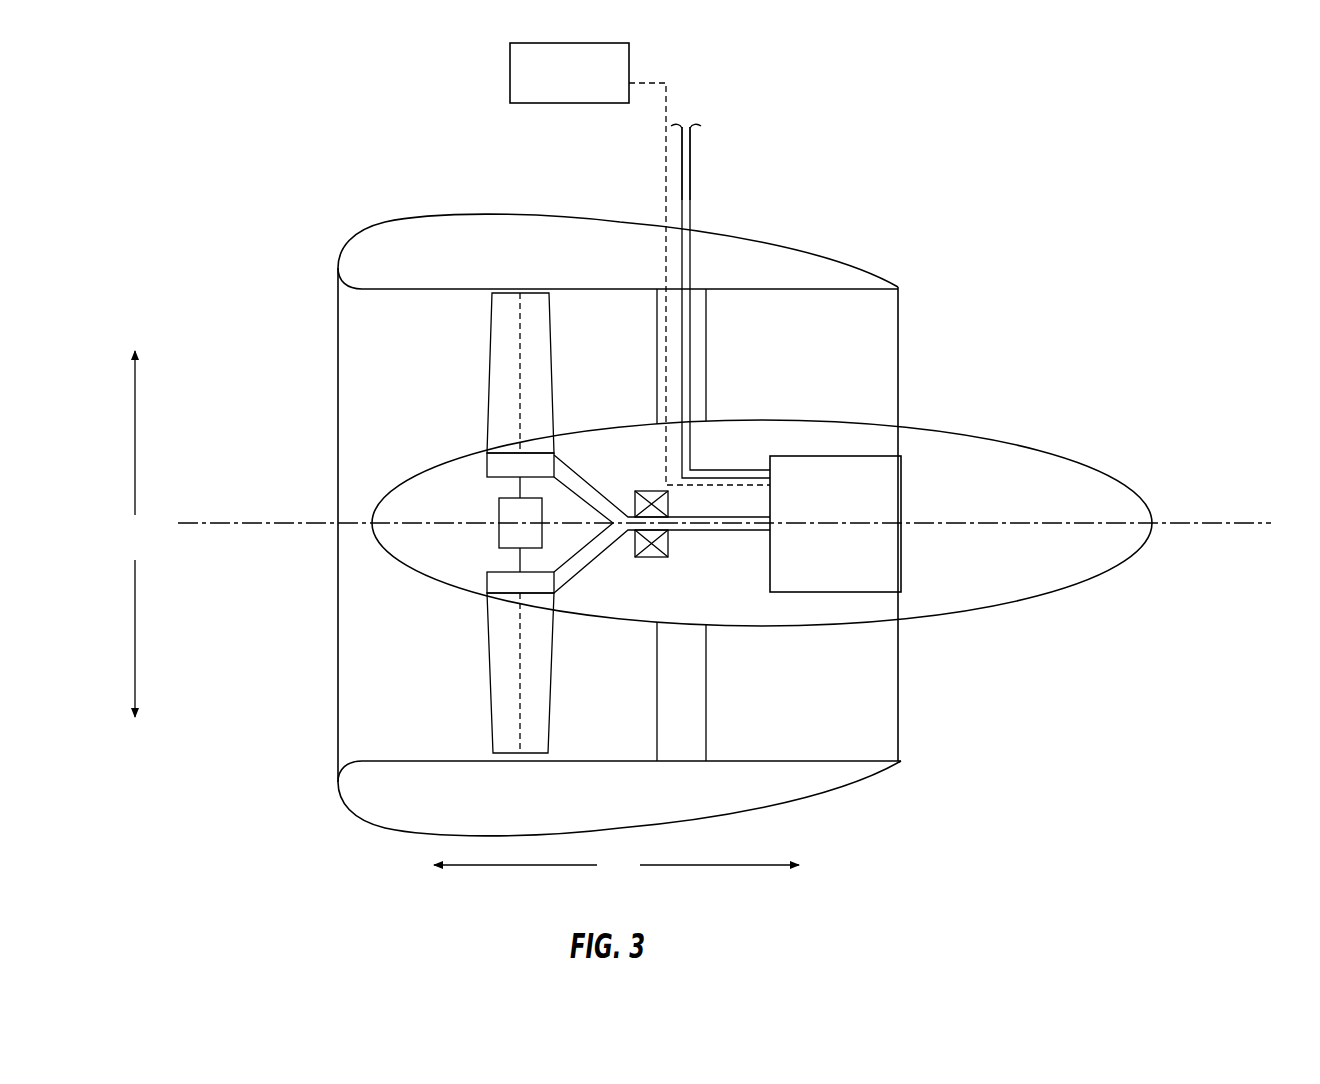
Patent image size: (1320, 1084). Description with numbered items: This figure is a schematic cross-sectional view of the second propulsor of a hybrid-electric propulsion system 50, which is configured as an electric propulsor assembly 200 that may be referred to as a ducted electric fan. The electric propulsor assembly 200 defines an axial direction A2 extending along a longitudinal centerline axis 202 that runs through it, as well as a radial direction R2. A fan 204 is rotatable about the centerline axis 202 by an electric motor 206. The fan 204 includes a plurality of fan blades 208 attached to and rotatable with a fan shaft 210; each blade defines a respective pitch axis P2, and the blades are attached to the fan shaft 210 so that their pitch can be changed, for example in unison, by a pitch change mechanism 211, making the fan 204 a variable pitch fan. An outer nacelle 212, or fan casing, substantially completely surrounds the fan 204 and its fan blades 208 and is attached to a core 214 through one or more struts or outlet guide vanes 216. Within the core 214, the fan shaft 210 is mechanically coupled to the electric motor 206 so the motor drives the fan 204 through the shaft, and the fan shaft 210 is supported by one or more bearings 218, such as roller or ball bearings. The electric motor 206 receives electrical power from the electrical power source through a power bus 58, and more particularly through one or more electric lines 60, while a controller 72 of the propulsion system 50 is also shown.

The hybrid-electric propulsion system 50 is at (970, 256).
The power bus 58 is at (740, 170).
The electric lines 60 is at (698, 388).
The controller 72 is at (582, 86).
The electric propulsor assembly 200 is at (402, 150).
The longitudinal centerline axis 202 is at (1206, 522).
The fan 204 is at (388, 362).
The electric motor 206 is at (903, 508).
The fan blades 208 is at (487, 428).
The fan shaft 210 is at (682, 533).
The pitch change mechanism 211 is at (499, 533).
The outer nacelle 212 is at (768, 236).
The core 214 is at (993, 428).
The struts 216 is at (706, 722).
The bearings 218 is at (650, 491).
The pitch axis P2 is at (520, 358).
The radial direction R2 is at (144, 534).
The axial direction A2 is at (616, 871).